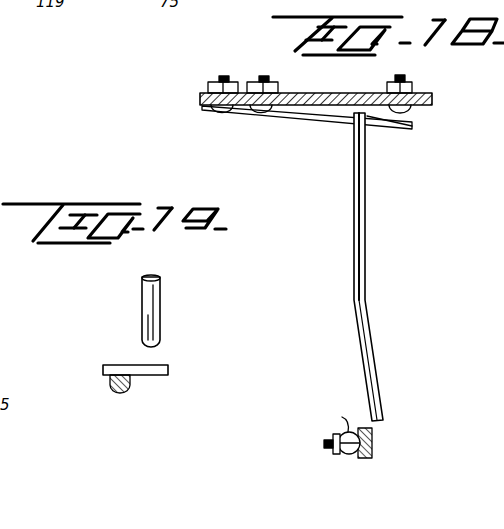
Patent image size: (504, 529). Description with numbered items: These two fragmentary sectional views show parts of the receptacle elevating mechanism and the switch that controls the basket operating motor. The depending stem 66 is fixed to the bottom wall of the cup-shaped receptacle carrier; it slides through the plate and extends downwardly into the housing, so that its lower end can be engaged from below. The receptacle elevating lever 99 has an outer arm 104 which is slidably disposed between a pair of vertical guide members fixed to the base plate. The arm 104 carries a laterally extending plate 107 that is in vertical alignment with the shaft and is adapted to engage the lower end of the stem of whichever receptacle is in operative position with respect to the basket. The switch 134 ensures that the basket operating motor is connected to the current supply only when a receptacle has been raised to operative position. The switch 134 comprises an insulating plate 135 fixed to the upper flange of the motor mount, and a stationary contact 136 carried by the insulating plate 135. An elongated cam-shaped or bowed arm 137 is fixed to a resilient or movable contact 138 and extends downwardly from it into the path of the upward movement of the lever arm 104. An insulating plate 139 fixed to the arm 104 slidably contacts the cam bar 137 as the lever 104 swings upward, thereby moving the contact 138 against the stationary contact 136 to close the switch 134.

In FIG. 19, the depending stem 66 is at (162, 323).
In FIG. 19, the receptacle elevating lever 99 is at (124, 394).
In FIG. 18, the outer arm 104 is at (301, 393).
In FIG. 19, the outer arm 104 is at (118, 386).
In FIG. 19, the laterally extending plate 107 is at (160, 376).
In FIG. 18, the switch 134 is at (326, 118).
In FIG. 18, the insulating plate 135 is at (319, 92).
In FIG. 18, the stationary contact 136 is at (408, 111).
In FIG. 18, the cam-shaped or bowed arm 137 is at (363, 260).
In FIG. 18, the resilient or movable contact 138 is at (397, 129).
In FIG. 18, the insulating plate 139 is at (366, 460).